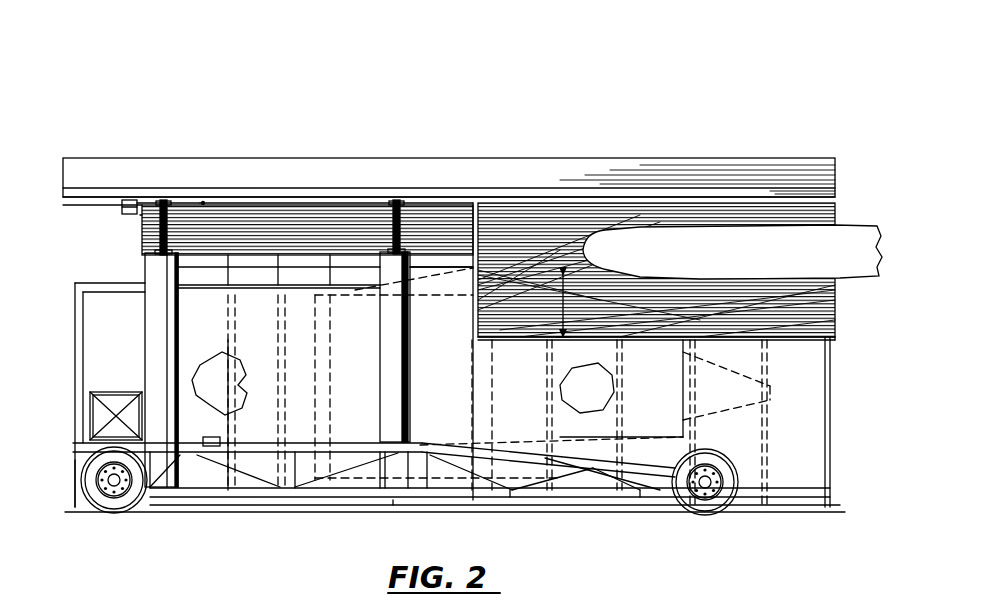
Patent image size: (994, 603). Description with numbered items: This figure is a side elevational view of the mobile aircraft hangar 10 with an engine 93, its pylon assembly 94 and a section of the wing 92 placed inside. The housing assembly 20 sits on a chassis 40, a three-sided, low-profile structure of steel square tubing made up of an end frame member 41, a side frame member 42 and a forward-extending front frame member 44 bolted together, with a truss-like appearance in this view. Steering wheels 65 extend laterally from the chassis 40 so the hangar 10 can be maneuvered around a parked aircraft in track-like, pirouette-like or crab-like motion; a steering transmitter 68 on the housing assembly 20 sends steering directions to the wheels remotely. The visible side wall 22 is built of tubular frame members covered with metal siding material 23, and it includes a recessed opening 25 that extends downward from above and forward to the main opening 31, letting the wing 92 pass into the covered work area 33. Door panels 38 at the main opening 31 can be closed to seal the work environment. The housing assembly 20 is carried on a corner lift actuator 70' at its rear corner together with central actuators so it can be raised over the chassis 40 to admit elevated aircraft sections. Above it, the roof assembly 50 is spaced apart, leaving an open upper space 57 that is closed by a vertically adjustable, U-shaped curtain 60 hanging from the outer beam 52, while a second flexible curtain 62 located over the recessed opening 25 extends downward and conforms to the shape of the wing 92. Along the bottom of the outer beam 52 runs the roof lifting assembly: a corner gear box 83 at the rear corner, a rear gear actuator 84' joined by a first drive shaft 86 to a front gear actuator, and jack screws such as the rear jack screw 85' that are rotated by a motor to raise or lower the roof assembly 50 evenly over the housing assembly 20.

The mobile aircraft hangar 10 is at (212, 85).
The housing assembly 20 is at (138, 357).
The side wall 22 is at (371, 390).
The metal siding material 23 is at (248, 373).
The recessed opening 25 is at (566, 302).
The main opening 31 is at (832, 404).
The work area 33 is at (600, 402).
The door panels 38 is at (827, 366).
The chassis 40 is at (255, 502).
The end frame member 41 is at (80, 462).
The side frame member 42 is at (300, 450).
The front frame member 44 is at (600, 500).
The roof assembly 50 is at (642, 158).
The outer beam 52 is at (271, 198).
The upper space 57 is at (140, 216).
The vertically adjustable curtain 60 is at (142, 238).
The second flexible curtain 62 is at (553, 214).
The steering wheels 65 is at (116, 506).
The steering transmitter 68 is at (215, 440).
The corner lift actuator 70' is at (138, 370).
The corner gear box 83 is at (130, 198).
The rear gear actuator 84' is at (179, 192).
The rear jack screw 85' is at (196, 170).
The first drive shaft 86 is at (318, 204).
The wing 92 is at (848, 242).
The engine 93 is at (746, 386).
The pylon assembly 94 is at (441, 309).